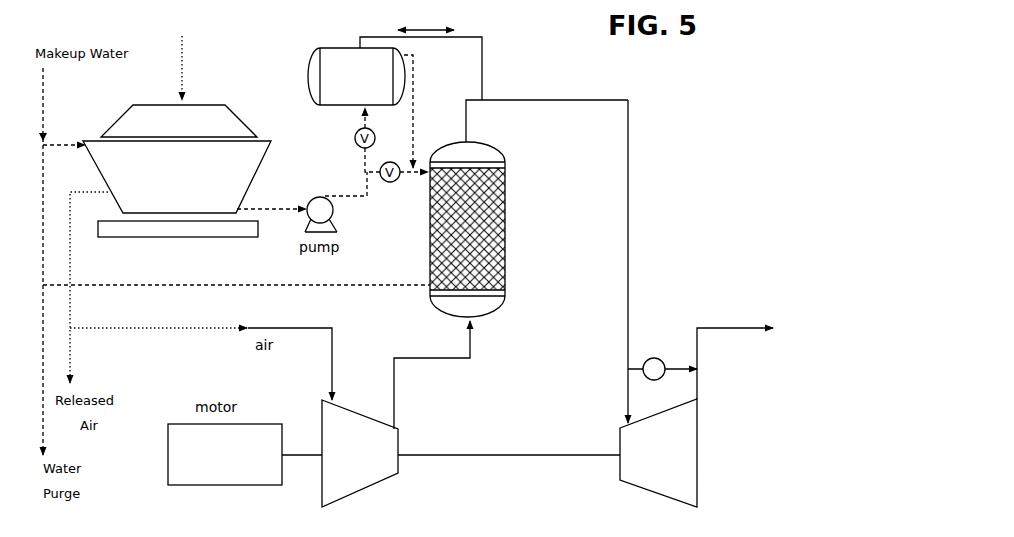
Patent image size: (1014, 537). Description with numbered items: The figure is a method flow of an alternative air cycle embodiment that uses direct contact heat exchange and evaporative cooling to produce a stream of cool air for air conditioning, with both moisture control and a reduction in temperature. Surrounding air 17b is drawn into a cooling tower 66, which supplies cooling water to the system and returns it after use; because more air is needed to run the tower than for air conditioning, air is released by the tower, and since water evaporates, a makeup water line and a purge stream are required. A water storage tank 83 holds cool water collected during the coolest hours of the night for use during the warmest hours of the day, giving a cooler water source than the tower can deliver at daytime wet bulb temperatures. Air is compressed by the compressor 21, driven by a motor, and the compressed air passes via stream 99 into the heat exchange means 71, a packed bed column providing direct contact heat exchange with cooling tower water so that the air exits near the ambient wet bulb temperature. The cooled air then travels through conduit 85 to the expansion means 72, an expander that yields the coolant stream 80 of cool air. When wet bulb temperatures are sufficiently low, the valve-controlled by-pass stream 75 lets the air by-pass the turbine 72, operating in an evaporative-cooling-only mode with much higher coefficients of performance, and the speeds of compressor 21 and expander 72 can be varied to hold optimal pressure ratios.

The surrounding air stream 17b is at (186, 73).
The cooling tower 66 is at (177, 181).
The water storage tank 83 is at (309, 91).
The heat exchange means 71 is at (505, 151).
The air conduit from column to expander 85 is at (632, 193).
The by-pass stream 75 is at (680, 366).
The coolant stream 80 is at (707, 328).
The expansion means 72 is at (700, 432).
The compressor 21 is at (400, 471).
The compressed air stream 99 is at (395, 391).